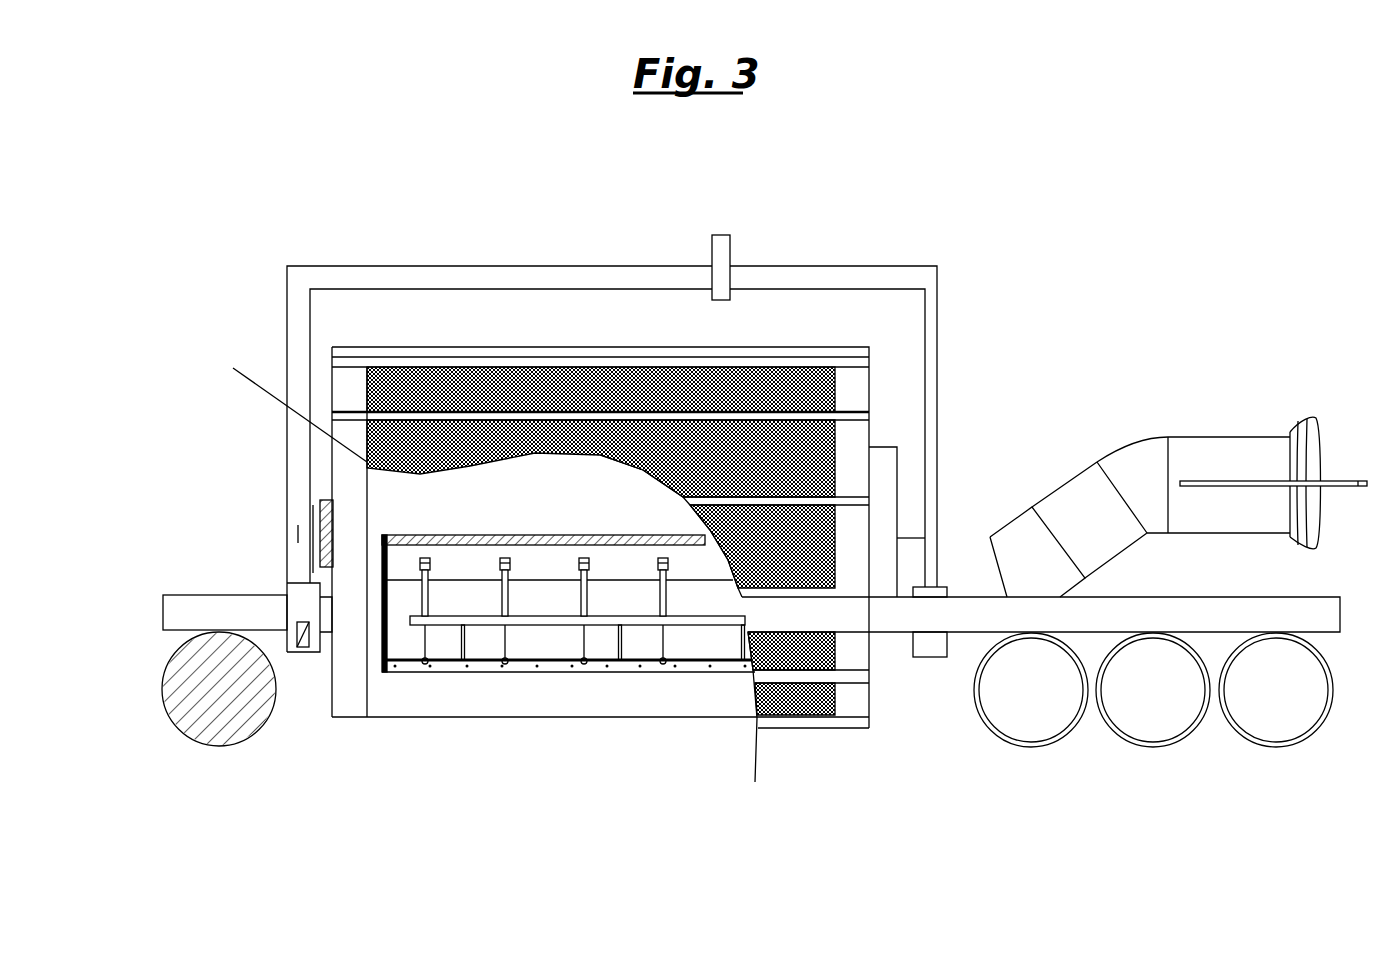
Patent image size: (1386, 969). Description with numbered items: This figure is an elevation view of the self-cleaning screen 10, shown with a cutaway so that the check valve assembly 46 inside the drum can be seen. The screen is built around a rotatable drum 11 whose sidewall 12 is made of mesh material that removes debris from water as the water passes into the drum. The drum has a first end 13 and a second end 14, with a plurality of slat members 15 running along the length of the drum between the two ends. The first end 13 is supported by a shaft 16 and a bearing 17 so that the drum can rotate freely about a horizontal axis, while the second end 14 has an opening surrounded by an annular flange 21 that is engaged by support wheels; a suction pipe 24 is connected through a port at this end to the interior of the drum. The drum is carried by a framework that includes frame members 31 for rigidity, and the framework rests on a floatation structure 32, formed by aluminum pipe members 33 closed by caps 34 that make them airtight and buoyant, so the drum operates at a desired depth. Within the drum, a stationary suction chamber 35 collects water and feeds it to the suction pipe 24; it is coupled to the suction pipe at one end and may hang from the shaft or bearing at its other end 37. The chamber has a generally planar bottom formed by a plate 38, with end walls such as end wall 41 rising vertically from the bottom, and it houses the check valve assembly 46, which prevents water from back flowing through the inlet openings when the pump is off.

The self-cleaning screen 10 is at (213, 190).
The rotatable drum 11 is at (837, 392).
The sidewall 12 is at (485, 385).
The first end 13 is at (332, 387).
The second end 14 is at (870, 438).
The slat members 15 is at (620, 418).
The shaft 16 is at (308, 537).
The bearing 17 is at (317, 500).
The annular flange 21 is at (885, 483).
The suction pipe 24 is at (1078, 487).
The frame members 31 is at (906, 285).
The floatation structure 32 is at (1055, 747).
The pipe members 33 is at (1193, 737).
The caps 34 is at (1157, 723).
The suction chamber 35 is at (537, 555).
The other end 37 is at (408, 673).
The plate 38 is at (553, 673).
The end wall 41 is at (383, 653).
The check valve assembly 46 is at (587, 640).